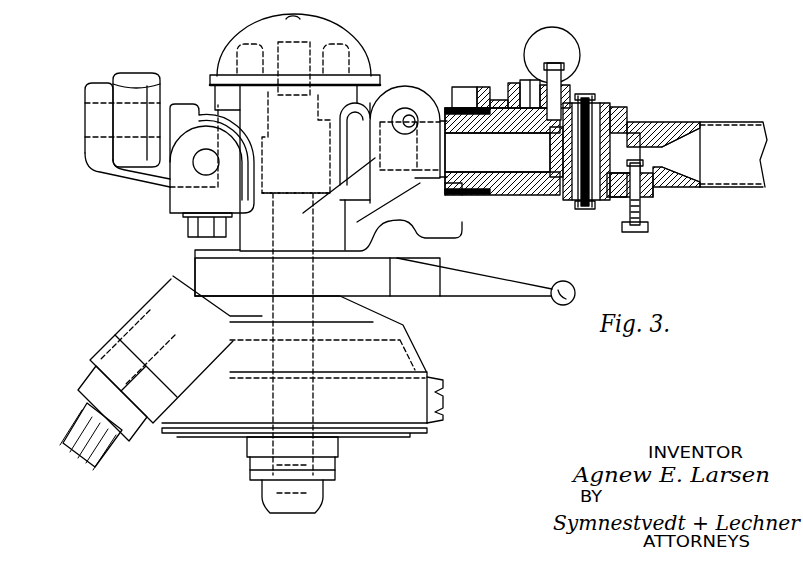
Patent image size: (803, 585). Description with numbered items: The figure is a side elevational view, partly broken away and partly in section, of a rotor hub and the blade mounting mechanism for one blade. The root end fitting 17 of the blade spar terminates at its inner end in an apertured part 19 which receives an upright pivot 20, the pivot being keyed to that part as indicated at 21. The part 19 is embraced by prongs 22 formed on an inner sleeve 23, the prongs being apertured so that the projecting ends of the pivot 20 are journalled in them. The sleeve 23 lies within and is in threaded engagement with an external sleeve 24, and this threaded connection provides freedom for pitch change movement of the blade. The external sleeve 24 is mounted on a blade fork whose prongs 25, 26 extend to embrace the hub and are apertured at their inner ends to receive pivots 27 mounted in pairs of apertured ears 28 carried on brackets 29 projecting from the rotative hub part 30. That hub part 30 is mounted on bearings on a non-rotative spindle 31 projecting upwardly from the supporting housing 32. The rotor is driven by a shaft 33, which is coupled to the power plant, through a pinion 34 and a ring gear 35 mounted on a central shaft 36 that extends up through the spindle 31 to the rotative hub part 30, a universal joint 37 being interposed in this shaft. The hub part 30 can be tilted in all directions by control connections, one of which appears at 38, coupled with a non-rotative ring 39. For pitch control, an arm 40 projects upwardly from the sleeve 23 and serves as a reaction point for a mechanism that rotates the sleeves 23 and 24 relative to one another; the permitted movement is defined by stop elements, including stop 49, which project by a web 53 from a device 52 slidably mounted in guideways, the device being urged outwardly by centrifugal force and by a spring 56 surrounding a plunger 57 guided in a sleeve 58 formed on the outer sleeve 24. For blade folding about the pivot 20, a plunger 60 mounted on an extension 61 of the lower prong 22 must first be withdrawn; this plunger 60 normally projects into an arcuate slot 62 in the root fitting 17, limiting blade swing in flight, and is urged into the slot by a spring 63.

The root end fitting 17 is at (665, 122).
The part 19 is at (533, 195).
The pivot 20 is at (603, 182).
The key 21 is at (552, 151).
The prongs 22 is at (625, 120).
The sleeve 23 is at (519, 197).
The external sleeve 24 is at (462, 192).
The prong 25 is at (187, 107).
The prong 26 is at (153, 99).
The pivots 27 is at (85, 133).
The apertured ears 28 is at (182, 168).
The brackets 29 is at (167, 203).
The rotative hub part 30 is at (243, 93).
The non-rotative spindle 31 is at (372, 300).
The supporting housing 32 is at (398, 333).
The shaft 33 is at (106, 448).
The pinion 34 is at (140, 311).
The ring gear 35 is at (410, 358).
The central shaft 36 is at (317, 400).
The universal joint 37 is at (300, 164).
The control connection 38 is at (515, 288).
The non-rotative ring 39 is at (387, 270).
The arm 40 is at (570, 86).
The stop element 49 is at (548, 83).
The device 52 is at (507, 97).
The web 53 is at (517, 100).
The spring 56 is at (487, 99).
The plunger 57 is at (467, 87).
The sleeve 58 is at (453, 88).
The plunger 60 is at (650, 197).
The extension 61 is at (653, 190).
The arcuate slot 62 is at (642, 160).
The spring 63 is at (647, 215).